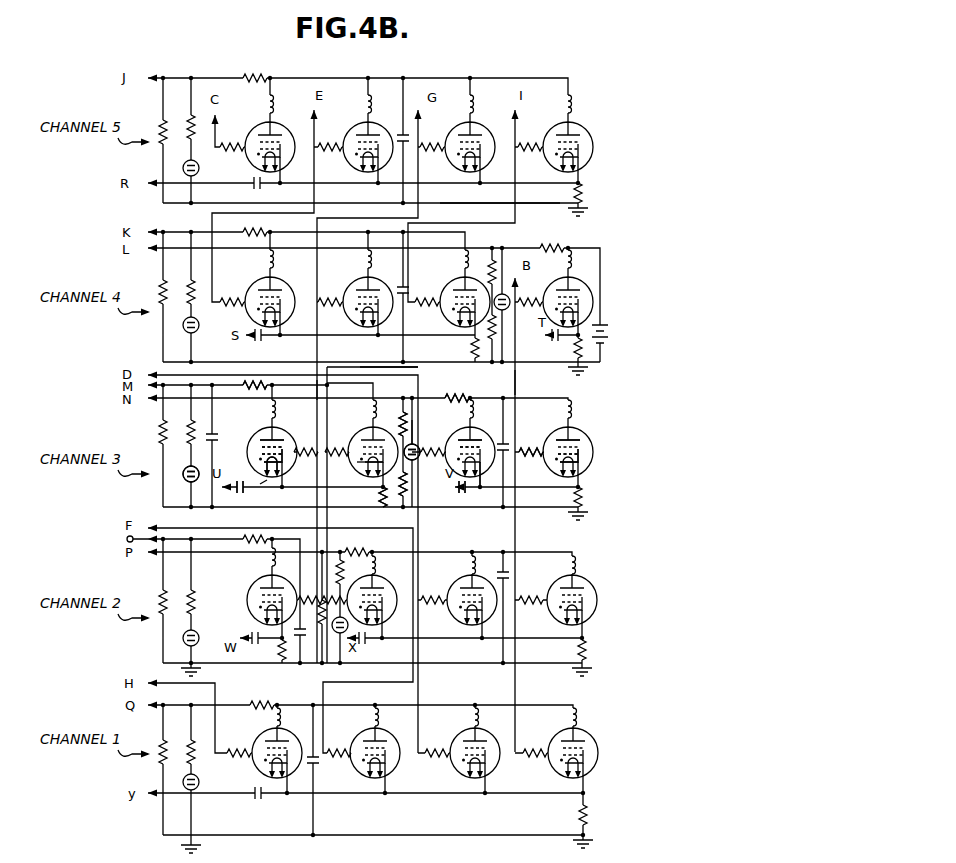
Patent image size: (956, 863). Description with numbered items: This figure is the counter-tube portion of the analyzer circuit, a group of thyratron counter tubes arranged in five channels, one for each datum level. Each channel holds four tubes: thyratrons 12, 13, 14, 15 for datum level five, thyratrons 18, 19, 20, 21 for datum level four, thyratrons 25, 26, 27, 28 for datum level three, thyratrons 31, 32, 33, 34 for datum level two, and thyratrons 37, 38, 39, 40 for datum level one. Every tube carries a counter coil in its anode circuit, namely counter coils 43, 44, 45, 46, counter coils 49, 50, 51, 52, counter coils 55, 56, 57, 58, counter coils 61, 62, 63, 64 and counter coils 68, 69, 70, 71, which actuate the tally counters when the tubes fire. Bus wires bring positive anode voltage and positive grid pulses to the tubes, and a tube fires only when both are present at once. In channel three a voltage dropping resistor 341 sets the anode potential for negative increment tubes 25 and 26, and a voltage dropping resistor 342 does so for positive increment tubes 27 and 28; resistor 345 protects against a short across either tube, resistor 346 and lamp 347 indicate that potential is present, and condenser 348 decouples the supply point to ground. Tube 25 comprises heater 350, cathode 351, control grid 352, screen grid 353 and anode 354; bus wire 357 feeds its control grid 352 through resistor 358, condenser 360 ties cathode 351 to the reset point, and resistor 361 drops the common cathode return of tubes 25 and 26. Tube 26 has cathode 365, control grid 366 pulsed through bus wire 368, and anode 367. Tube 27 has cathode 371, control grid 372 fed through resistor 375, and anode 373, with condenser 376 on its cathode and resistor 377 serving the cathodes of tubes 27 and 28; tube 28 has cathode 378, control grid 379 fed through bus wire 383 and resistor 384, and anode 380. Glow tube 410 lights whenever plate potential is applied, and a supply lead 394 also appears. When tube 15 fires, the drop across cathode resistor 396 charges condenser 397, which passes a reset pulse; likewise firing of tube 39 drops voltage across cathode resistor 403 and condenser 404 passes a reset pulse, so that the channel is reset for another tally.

The thyratron counter tube 12 is at (257, 131).
The thyratron counter tube 13 is at (351, 128).
The thyratron counter tube 14 is at (456, 128).
The thyratron counter tube 15 is at (555, 126).
The counter coil 43 is at (274, 110).
The counter coil 44 is at (372, 105).
The counter coil 45 is at (474, 108).
The counter coil 46 is at (572, 108).
The condenser 397 is at (260, 185).
The bus wire 368 is at (513, 194).
The cathode resistor 396 is at (580, 188).
The thyratron counter tube 18 is at (255, 284).
The thyratron counter tube 19 is at (352, 284).
The thyratron counter tube 20 is at (450, 286).
The thyratron counter tube 21 is at (555, 284).
The counter coil 49 is at (275, 269).
The counter coil 50 is at (373, 269).
The counter coil 51 is at (463, 262).
The counter coil 52 is at (573, 265).
The thyratron counter tube 25 is at (258, 442).
The thyratron counter tube 26 is at (364, 428).
The thyratron counter tube 27 is at (458, 436).
The thyratron counter tube 28 is at (555, 436).
The counter coil 55 is at (276, 419).
The counter coil 56 is at (364, 402).
The counter coil 57 is at (473, 419).
The counter coil 58 is at (572, 419).
The voltage dropping resistor 341 is at (260, 387).
The bus wire 357 is at (324, 390).
The resistor 345 is at (163, 438).
The resistor 346 is at (190, 421).
The lamp 347 is at (184, 474).
The condenser 348 is at (226, 427).
The anode 354 is at (284, 438).
The screen grid 353 is at (261, 447).
The control grid 352 is at (261, 454).
The resistor 358 is at (288, 462).
The cathode 351 is at (290, 463).
The heater 350 is at (262, 486).
The condenser 360 is at (243, 489).
The anode 367 is at (404, 420).
The control grid 366 is at (352, 476).
The resistor 361 is at (379, 496).
The cathode 365 is at (400, 495).
The supply lead 394 is at (417, 379).
The voltage dropping resistor 342 is at (448, 396).
The bus wire 383 is at (515, 384).
The glow tube 410 is at (414, 446).
The control grid 372 is at (456, 444).
The resistor 375 is at (416, 460).
The anode 373 is at (470, 440).
The cathode 371 is at (480, 472).
The condenser 376 is at (462, 488).
The resistor 384 is at (538, 450).
The anode 380 is at (580, 440).
The control grid 379 is at (584, 448).
The cathode 378 is at (588, 458).
The resistor 377 is at (582, 497).
The thyratron counter tube 31 is at (258, 582).
The thyratron counter tube 32 is at (366, 582).
The thyratron counter tube 33 is at (458, 578).
The thyratron counter tube 34 is at (560, 574).
The counter coil 61 is at (276, 567).
The counter coil 62 is at (376, 567).
The counter coil 63 is at (476, 567).
The counter coil 64 is at (576, 567).
The thyratron counter tube 37 is at (262, 736).
The thyratron counter tube 38 is at (360, 736).
The thyratron counter tube 39 is at (460, 736).
The thyratron counter tube 40 is at (558, 736).
The counter coil 68 is at (282, 723).
The counter coil 69 is at (380, 723).
The counter coil 70 is at (480, 723).
The counter coil 71 is at (578, 721).
The condenser 404 is at (260, 797).
The cathode resistor 403 is at (585, 814).